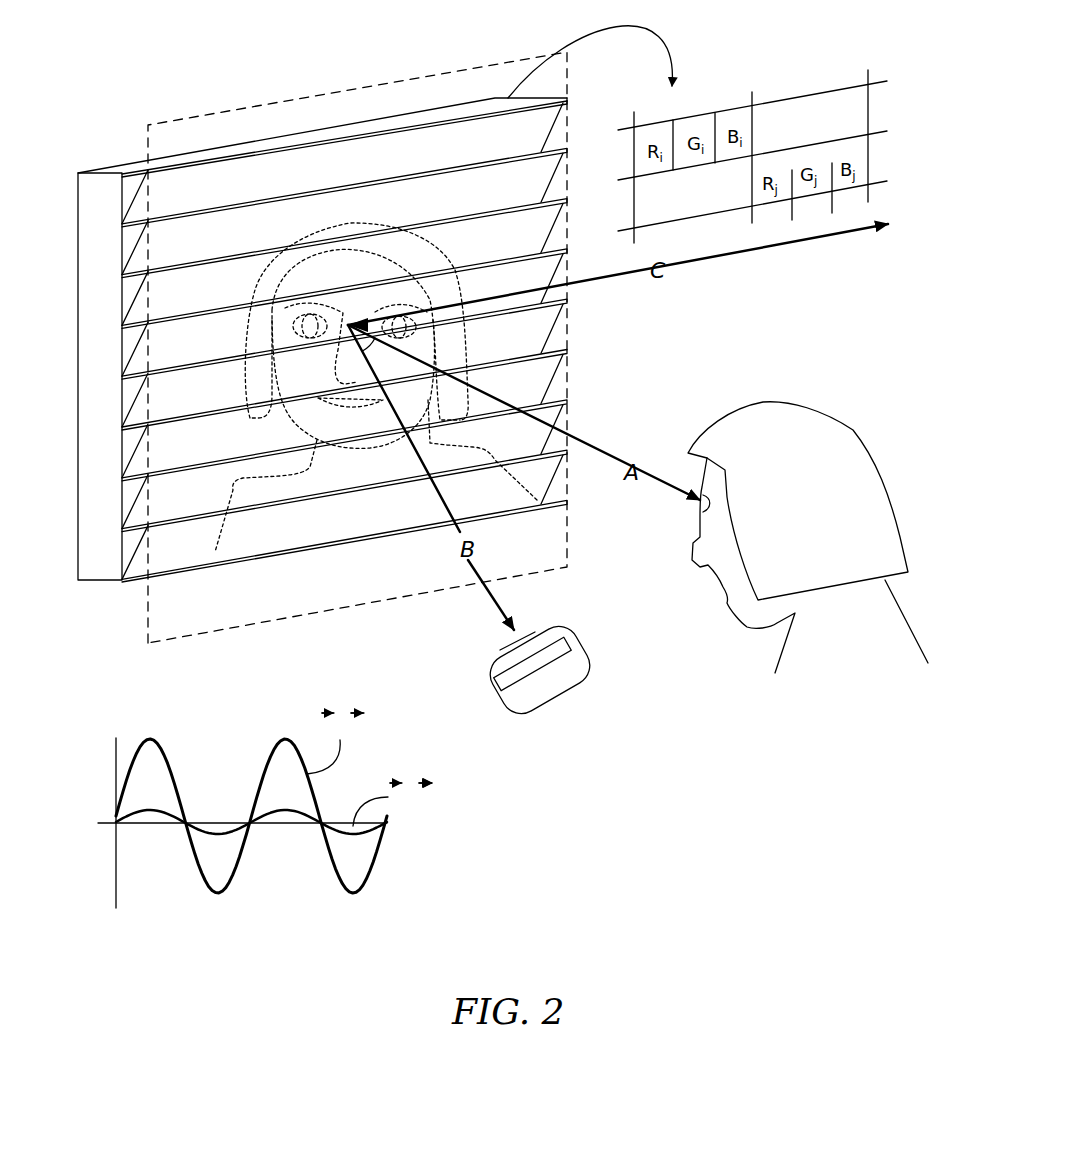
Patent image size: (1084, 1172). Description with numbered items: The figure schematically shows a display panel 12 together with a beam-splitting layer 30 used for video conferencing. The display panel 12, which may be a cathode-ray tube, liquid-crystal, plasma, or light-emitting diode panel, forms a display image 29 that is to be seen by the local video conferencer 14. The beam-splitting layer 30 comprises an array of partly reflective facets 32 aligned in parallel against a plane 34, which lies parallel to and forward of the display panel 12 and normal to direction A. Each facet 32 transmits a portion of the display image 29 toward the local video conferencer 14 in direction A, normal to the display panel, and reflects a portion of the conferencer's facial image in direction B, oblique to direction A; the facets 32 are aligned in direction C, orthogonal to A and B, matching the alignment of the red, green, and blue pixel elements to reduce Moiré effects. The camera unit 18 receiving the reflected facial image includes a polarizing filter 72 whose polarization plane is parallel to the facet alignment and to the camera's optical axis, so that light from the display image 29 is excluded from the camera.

The display panel 12 is at (111, 387).
The local video conferencer 14 is at (785, 380).
The sensor device 18 is at (605, 660).
The display image 29 is at (296, 240).
The beam-splitting layer 30 is at (322, 374).
The partly reflective facets 32 is at (472, 182).
The plane 34 is at (213, 113).
The polarizing filter 72 is at (532, 692).